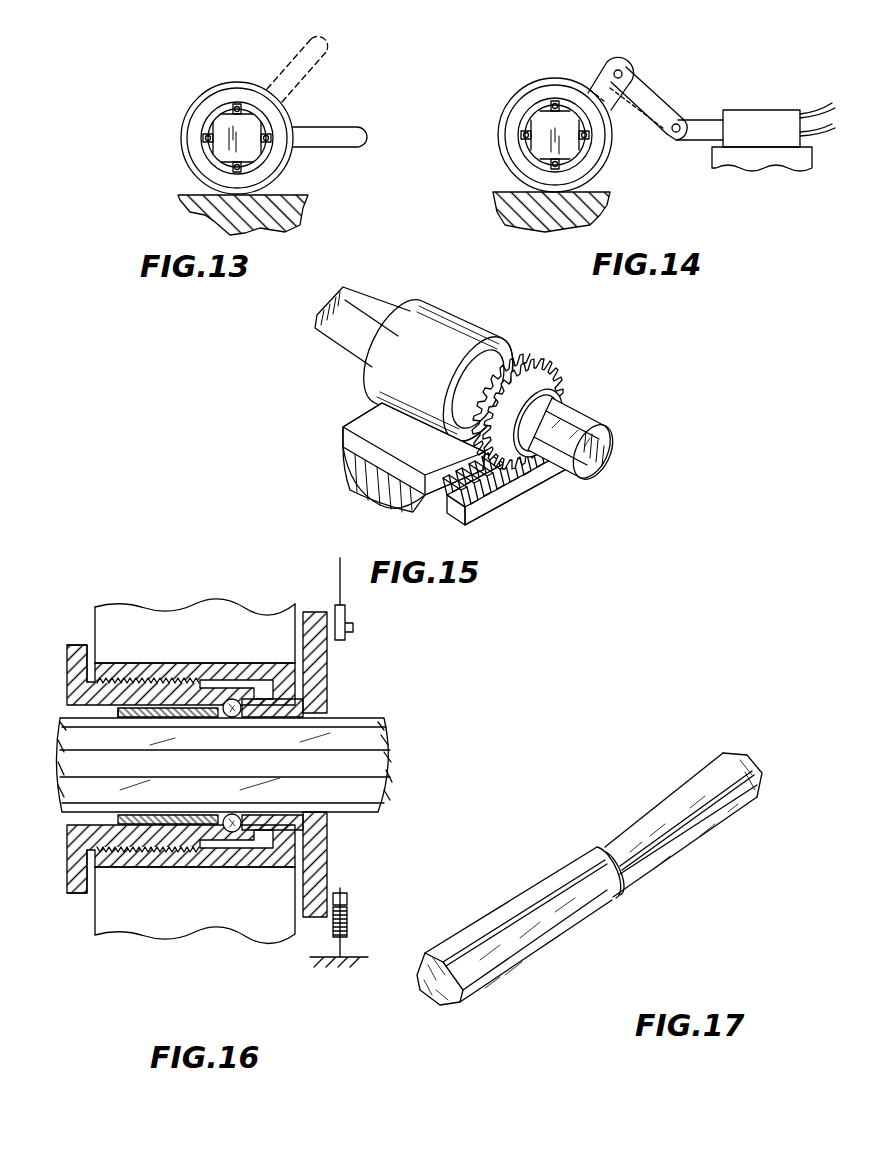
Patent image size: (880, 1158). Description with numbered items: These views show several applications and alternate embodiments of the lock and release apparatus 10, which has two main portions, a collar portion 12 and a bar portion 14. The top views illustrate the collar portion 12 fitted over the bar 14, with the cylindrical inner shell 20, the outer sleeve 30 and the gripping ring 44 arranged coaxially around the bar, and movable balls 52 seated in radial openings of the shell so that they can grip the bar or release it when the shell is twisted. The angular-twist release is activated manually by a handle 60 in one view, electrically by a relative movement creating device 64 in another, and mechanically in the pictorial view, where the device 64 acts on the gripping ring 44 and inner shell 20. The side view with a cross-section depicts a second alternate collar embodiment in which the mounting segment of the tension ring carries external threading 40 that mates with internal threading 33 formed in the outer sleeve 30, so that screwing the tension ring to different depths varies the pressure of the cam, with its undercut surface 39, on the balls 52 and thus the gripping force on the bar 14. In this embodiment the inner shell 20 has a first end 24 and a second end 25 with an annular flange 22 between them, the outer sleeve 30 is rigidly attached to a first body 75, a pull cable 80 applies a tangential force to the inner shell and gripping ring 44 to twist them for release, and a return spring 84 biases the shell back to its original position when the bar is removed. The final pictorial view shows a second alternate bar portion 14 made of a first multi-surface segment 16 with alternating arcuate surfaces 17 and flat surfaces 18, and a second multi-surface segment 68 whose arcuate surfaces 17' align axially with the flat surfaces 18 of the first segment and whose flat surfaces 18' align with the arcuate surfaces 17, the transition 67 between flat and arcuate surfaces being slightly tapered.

In FIG. 13, the lock and release apparatus 10 is at (243, 60).
In FIG. 14, the lock and release apparatus 10 is at (584, 72).
In FIG. 15, the lock and release apparatus 10 is at (352, 402).
In FIG. 16, the lock and release apparatus 10 is at (378, 697).
In FIG. 13, the collar portion 12 is at (197, 86).
In FIG. 14, the collar portion 12 is at (505, 99).
In FIG. 15, the collar portion 12 is at (575, 358).
In FIG. 13, the bar portion 14 is at (246, 127).
In FIG. 14, the bar portion 14 is at (543, 125).
In FIG. 15, the bar portion 14 is at (622, 442).
In FIG. 16, the bar portion 14 is at (394, 738).
In FIG. 17, the bar portion 14 is at (578, 840).
In FIG. 13, the inner shell 20 is at (212, 122).
In FIG. 14, the inner shell 20 is at (530, 152).
In FIG. 15, the inner shell 20 is at (510, 371).
In FIG. 13, the outer sleeve 30 is at (292, 118).
In FIG. 14, the outer sleeve 30 is at (612, 156).
In FIG. 15, the outer sleeve 30 is at (490, 331).
In FIG. 13, the gripping ring 44 is at (276, 160).
In FIG. 14, the gripping ring 44 is at (517, 134).
In FIG. 15, the gripping ring 44 is at (566, 390).
In FIG. 13, the movable ball 52 is at (232, 170).
In FIG. 14, the movable ball 52 is at (555, 135).
In FIG. 16, the movable ball 52 is at (245, 700).
In FIG. 13, the handle 60 is at (351, 135).
In FIG. 14, the handle 60 is at (610, 70).
In FIG. 14, the relative movement creating device 64 is at (742, 121).
In FIG. 15, the relative movement creating device 64 is at (523, 486).
In FIG. 16, the internal threading 33 is at (146, 676).
In FIG. 16, the undercut surface 39 is at (219, 704).
In FIG. 16, the external threading 40 is at (119, 704).
In FIG. 16, the first body 75 is at (248, 628).
In FIG. 16, the pull cable 80 is at (347, 612).
In FIG. 16, the first end 24 is at (333, 816).
In FIG. 16, the second end 25 is at (88, 840).
In FIG. 16, the annular flange 22 is at (265, 846).
In FIG. 16, the return spring 84 is at (352, 932).
In FIG. 17, the multi-surface segment 16 is at (503, 896).
In FIG. 17, the arcuate surfaces 17 is at (440, 949).
In FIG. 17, the arcuate surfaces 17' is at (629, 873).
In FIG. 17, the flat surfaces 18 is at (522, 962).
In FIG. 17, the flat surfaces 18' is at (679, 781).
In FIG. 17, the transition 67 is at (604, 882).
In FIG. 17, the second multi-surface bar segment 68 is at (635, 808).